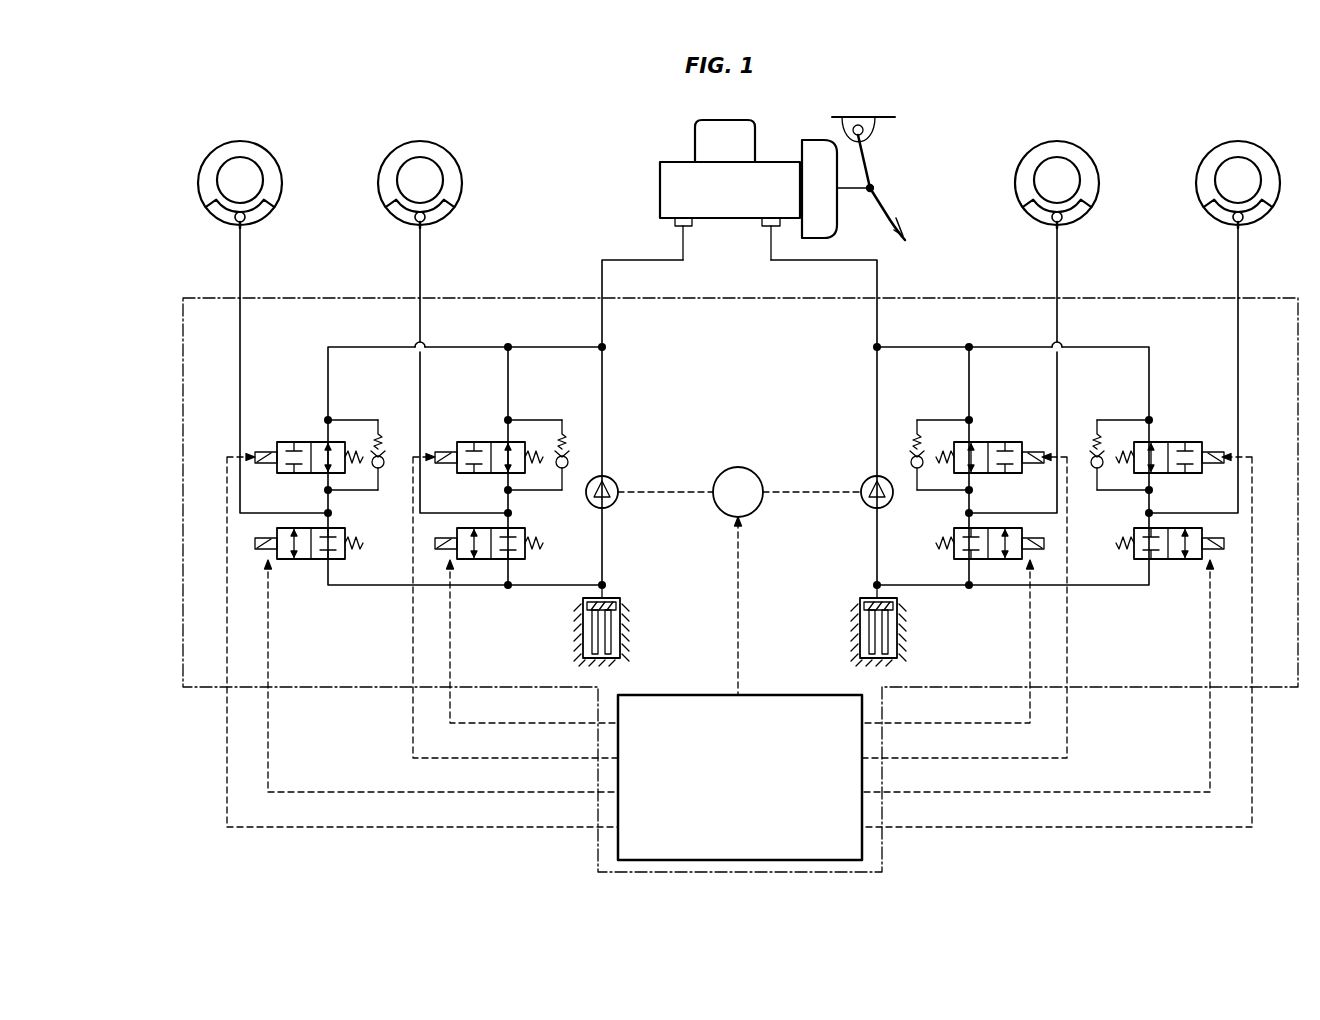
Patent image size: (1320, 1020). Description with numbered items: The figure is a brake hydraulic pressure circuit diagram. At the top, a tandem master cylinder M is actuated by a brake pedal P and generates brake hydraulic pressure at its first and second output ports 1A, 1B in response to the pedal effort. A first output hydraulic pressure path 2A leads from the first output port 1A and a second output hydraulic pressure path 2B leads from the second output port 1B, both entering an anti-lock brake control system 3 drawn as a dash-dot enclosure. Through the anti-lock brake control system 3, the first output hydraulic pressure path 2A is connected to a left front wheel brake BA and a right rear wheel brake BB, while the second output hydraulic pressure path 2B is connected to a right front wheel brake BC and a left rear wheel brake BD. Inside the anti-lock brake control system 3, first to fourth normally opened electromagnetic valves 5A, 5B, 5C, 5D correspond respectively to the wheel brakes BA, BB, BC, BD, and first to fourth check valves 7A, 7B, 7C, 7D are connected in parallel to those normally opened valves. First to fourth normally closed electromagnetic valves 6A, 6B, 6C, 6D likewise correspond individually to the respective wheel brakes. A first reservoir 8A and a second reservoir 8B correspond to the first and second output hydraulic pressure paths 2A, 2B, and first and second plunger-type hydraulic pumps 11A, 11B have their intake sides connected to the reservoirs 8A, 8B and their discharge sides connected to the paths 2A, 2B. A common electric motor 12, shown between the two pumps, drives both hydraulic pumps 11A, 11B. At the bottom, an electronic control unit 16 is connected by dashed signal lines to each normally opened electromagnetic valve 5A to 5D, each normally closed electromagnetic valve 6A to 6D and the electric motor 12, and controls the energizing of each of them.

The left front wheel brake BA is at (286, 186).
The right rear wheel brake BB is at (466, 186).
The right front wheel brake BC is at (1196, 180).
The left rear wheel brake BD is at (1014, 180).
The tandem master cylinder M is at (660, 184).
The brake pedal P is at (885, 212).
The first output port 1A is at (675, 228).
The second output port 1B is at (767, 232).
The first output hydraulic pressure path 2A is at (602, 280).
The second output hydraulic pressure path 2B is at (877, 280).
The anti-lock brake control system 3 is at (350, 298).
The first normally opened electromagnetic valve 5A is at (300, 442).
The second normally opened electromagnetic valve 5B is at (481, 442).
The third normally opened electromagnetic valve 5C is at (1183, 442).
The fourth normally opened electromagnetic valve 5D is at (991, 442).
The first normally closed electromagnetic valve 6A is at (289, 562).
The second normally closed electromagnetic valve 6B is at (470, 562).
The third normally closed electromagnetic valve 6C is at (1173, 562).
The fourth normally closed electromagnetic valve 6D is at (996, 562).
The first check valve 7A is at (384, 470).
The second check valve 7B is at (566, 470).
The third check valve 7C is at (1097, 470).
The fourth check valve 7D is at (913, 470).
The first reservoir 8A is at (622, 614).
The second reservoir 8B is at (858, 614).
The first plunger-type hydraulic pump 11A is at (614, 480).
The second plunger-type hydraulic pump 11B is at (864, 480).
The common electric motor 12 is at (718, 510).
The electronic control unit 16 is at (739, 657).